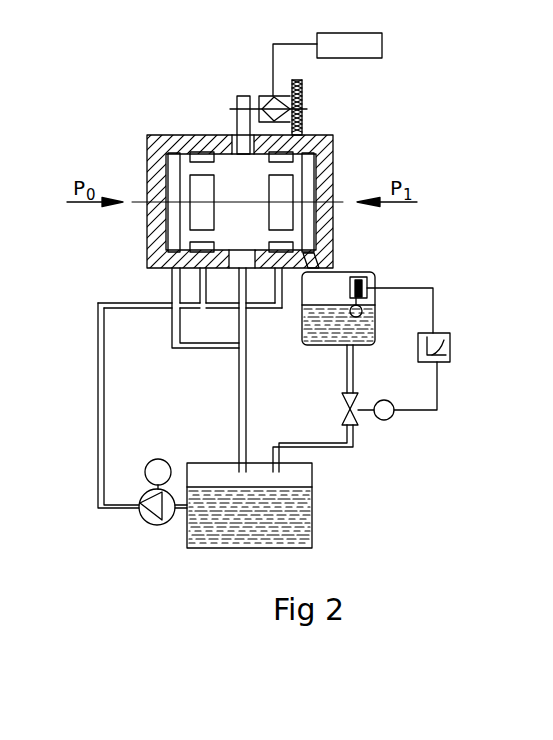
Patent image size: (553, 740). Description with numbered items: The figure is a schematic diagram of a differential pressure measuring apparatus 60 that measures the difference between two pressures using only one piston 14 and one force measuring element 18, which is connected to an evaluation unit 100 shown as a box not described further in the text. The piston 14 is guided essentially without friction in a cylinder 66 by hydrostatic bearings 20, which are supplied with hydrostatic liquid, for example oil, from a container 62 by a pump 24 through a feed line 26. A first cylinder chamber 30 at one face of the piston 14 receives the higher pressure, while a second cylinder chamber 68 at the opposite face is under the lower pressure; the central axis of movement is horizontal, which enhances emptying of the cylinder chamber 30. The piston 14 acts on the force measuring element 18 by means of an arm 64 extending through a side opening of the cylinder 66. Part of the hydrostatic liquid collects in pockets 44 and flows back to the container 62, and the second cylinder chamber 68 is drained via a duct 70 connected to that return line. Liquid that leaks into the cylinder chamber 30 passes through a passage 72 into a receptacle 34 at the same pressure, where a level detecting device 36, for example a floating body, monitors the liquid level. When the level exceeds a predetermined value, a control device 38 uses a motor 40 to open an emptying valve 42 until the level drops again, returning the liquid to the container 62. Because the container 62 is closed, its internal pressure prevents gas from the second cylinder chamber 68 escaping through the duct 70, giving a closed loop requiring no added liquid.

The piston 14 is at (228, 162).
The force measuring element 18 is at (282, 96).
The hydrostatic bearings 20 is at (270, 242).
The pump 24 is at (152, 515).
The feed line 26 is at (98, 405).
The cylinder chamber 30 is at (310, 180).
The receptacle 34 is at (375, 281).
The level detecting device 36 is at (350, 284).
The control device 38 is at (450, 353).
The motor 40 is at (386, 421).
The emptying valve 42 is at (343, 420).
The pockets 44 is at (242, 262).
The differential pressure measuring apparatus 60 is at (370, 112).
The container 62 is at (303, 530).
The arm 64 is at (234, 98).
The cylinder 66 is at (333, 153).
The second cylinder chamber 68 is at (170, 163).
The duct 70 is at (206, 349).
The passage 72 is at (312, 263).
The evaluation unit 100 is at (373, 45).